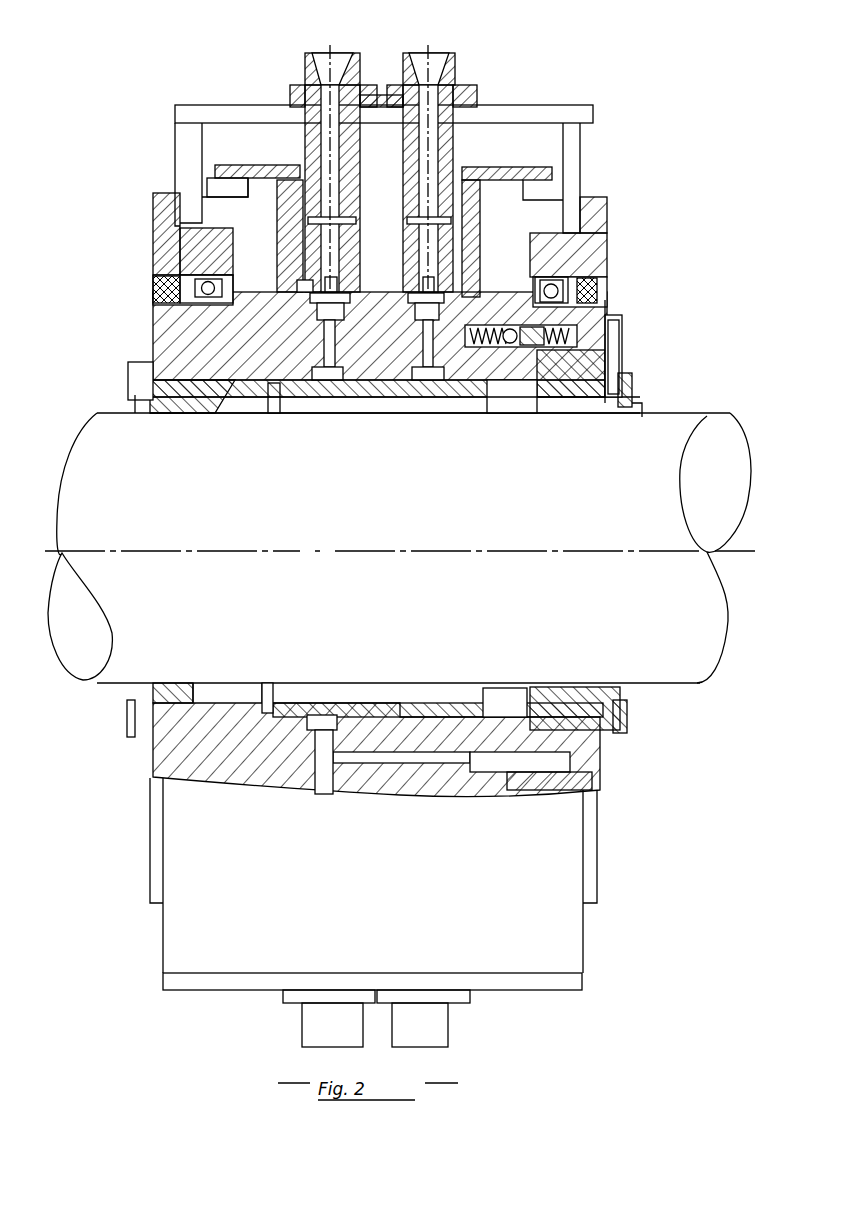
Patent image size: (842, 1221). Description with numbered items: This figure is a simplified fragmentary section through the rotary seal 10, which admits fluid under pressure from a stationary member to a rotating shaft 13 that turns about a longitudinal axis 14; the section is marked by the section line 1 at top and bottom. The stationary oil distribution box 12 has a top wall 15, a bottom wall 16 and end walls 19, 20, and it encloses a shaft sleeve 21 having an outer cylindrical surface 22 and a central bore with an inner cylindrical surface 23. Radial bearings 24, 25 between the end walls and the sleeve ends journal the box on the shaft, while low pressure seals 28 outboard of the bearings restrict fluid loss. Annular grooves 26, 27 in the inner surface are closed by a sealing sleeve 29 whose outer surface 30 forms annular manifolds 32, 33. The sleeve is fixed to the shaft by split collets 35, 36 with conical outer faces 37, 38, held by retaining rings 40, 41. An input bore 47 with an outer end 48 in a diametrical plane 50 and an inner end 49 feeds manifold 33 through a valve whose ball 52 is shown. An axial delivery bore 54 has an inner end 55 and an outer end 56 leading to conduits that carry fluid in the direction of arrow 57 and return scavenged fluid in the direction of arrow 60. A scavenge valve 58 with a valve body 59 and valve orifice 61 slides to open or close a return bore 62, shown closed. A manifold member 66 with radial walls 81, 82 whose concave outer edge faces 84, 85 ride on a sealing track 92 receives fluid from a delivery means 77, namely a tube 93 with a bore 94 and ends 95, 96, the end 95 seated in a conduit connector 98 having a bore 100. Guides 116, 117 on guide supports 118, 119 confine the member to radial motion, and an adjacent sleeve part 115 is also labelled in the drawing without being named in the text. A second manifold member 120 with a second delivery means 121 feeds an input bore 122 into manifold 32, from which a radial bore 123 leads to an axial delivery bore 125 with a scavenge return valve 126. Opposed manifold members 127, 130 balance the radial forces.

The section line 1 is at (395, 15).
The rotary seal 10 is at (572, 84).
The oil distribution box 12 is at (600, 114).
The shaft 13 is at (680, 425).
The longitudinal axis 14 is at (718, 552).
The top wall 15 is at (243, 105).
The bottom wall 16 is at (222, 990).
The end wall 19 is at (172, 138).
The end wall 20 is at (584, 148).
The shaft sleeve 21 is at (153, 339).
The outer cylindrical surface 22 is at (290, 290).
The inner cylindrical surface 23 is at (400, 415).
The radial bearing 24 is at (202, 275).
The radial bearing 25 is at (570, 277).
The annular groove 26 is at (310, 385).
The annular groove 27 is at (412, 385).
The low pressure seal 28 is at (156, 285).
The sealing sleeve 29 is at (462, 695).
The outer surface 30 is at (512, 396).
The annular manifold 32 is at (333, 382).
The annular manifold 33 is at (445, 385).
The collet 35 is at (168, 412).
The collet 36 is at (560, 412).
The outer face 37 is at (155, 376).
The outer face 38 is at (610, 345).
The retaining ring 40 is at (126, 393).
The retaining ring 41 is at (632, 385).
The input bore 47 is at (370, 350).
The outer end 48 is at (462, 265).
The inner end 49 is at (400, 365).
The diametrical plane 50 is at (480, 100).
The ball 52 is at (552, 345).
The axial delivery bore 54 is at (615, 318).
The inner end 55 is at (462, 322).
The outer end 56 is at (612, 345).
The arrow 57 is at (660, 292).
The scavenge valve 58 is at (555, 378).
The valve body 59 is at (480, 352).
The arrow 60 is at (672, 362).
The valve orifice 61 is at (505, 322).
The return bore 62 is at (552, 318).
The manifold member 66 is at (455, 252).
The delivery means 77 is at (460, 153).
The radial wall 81 is at (458, 226).
The radial wall 82 is at (404, 232).
The outer edge face 84 is at (450, 294).
The outer edge face 85 is at (355, 300).
The sealing track 92 is at (410, 325).
The tube 93 is at (455, 137).
The bore 94 is at (402, 135).
The end 95 is at (460, 90).
The end 96 is at (470, 212).
The conduit connector 98 is at (452, 70).
The bore 100 is at (440, 60).
The sleeve part 115 is at (404, 250).
The guide 116 is at (460, 280).
The guide 117 is at (366, 278).
The guide support 118 is at (482, 176).
The guide support 119 is at (402, 152).
The second manifold member 120 is at (298, 228).
The second delivery means 121 is at (310, 148).
The input bore 122 is at (318, 330).
The radial bore 123 is at (315, 768).
The axial delivery bore 125 is at (478, 772).
The scavenge return valve 126 is at (548, 778).
The opposed manifold member 127 is at (455, 1008).
The opposed manifold member 130 is at (300, 1018).